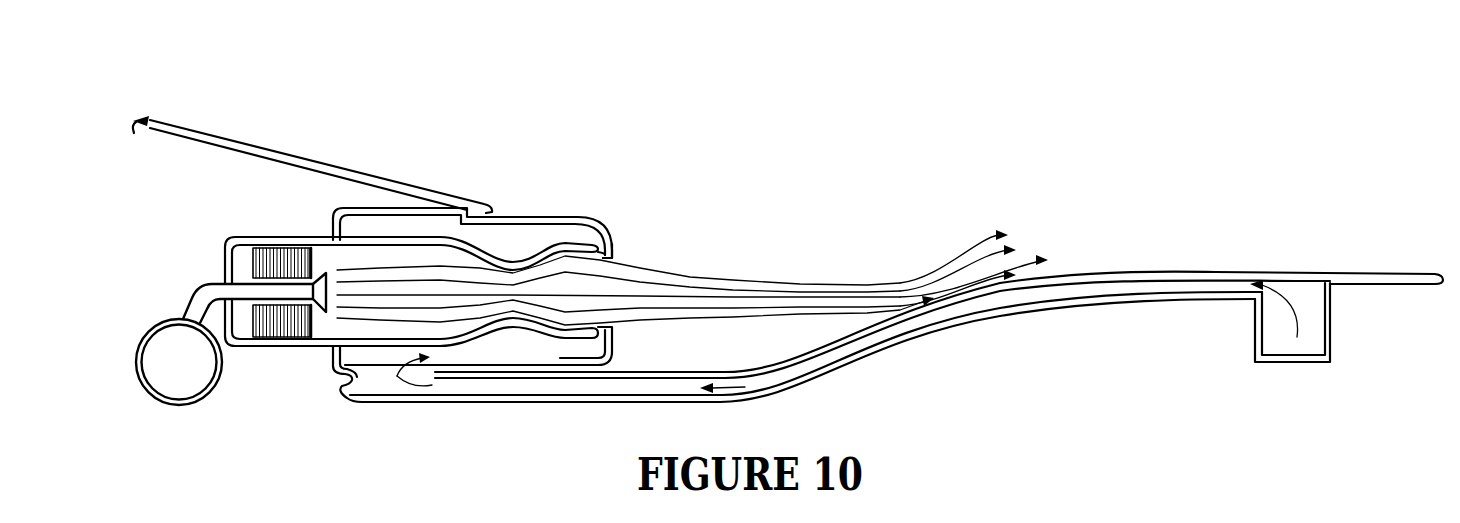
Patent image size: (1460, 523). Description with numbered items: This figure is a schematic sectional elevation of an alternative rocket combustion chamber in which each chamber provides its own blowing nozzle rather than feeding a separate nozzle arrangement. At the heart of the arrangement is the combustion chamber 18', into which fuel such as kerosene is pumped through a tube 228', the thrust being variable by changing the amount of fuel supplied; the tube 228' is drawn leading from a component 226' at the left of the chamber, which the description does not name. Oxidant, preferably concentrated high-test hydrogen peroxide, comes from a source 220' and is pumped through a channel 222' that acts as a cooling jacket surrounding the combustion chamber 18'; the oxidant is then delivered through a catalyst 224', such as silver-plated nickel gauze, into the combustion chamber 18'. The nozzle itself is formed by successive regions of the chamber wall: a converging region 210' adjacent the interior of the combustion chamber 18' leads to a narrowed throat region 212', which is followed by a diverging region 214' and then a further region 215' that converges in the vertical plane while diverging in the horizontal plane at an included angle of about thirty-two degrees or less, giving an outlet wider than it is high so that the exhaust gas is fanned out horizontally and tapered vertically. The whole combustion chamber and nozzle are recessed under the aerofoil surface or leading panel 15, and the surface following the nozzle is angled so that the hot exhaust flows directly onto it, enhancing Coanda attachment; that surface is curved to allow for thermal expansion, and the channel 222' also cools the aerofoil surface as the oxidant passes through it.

The leading panel 15 is at (228, 143).
The catalyst 224' is at (330, 205).
The tube 228' is at (298, 220).
The reservoir 226' is at (167, 329).
The combustion chamber 18' is at (692, 231).
The channel 222' is at (754, 195).
The diverging region 214' is at (535, 207).
The narrowed throat region 212' is at (519, 382).
The further region 215' is at (652, 186).
The converging region 210' is at (777, 365).
The source 220' is at (1311, 357).